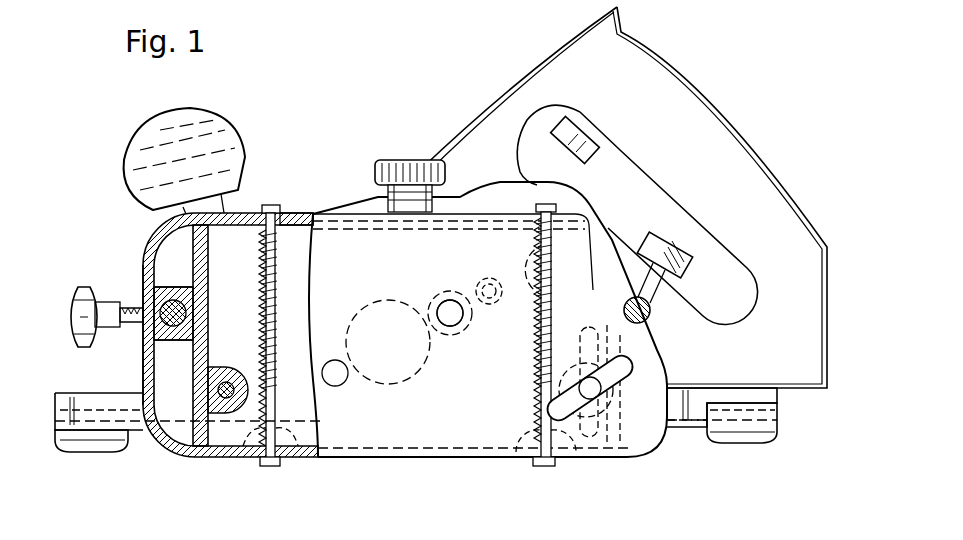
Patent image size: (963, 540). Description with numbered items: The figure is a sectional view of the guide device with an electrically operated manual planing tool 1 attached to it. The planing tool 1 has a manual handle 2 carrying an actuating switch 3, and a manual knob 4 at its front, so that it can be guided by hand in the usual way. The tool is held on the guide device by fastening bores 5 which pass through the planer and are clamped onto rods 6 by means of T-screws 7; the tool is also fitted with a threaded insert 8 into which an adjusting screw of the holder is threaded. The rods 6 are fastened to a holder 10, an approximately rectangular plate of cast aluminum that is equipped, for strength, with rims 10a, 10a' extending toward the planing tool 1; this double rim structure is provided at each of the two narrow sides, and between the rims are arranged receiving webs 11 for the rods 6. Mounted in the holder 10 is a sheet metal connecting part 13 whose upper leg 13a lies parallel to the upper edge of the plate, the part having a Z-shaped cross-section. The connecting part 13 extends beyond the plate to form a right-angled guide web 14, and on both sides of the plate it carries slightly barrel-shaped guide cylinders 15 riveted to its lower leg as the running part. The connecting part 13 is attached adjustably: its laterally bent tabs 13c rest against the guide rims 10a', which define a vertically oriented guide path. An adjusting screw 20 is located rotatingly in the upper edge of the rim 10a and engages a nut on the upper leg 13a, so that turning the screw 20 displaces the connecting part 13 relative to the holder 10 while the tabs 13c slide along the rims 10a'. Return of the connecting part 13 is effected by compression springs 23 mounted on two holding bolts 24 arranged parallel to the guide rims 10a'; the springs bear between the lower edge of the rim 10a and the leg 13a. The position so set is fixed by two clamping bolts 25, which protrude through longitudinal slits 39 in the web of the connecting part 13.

The manual planing tool 1 is at (342, 190).
The manual handle 2 is at (700, 127).
The actuating switch 3 is at (555, 120).
The manual knob 4 is at (213, 120).
The fastening bores 5 is at (648, 317).
The rods 6 is at (147, 362).
The T-screws 7 is at (82, 292).
The threaded insert 8 is at (470, 327).
The holder 10 is at (468, 243).
The rim 10a is at (230, 298).
The guide rim 10a' is at (385, 364).
The receiving webs 11 is at (142, 333).
The connecting part 13 is at (240, 240).
The upper leg 13a is at (310, 213).
The laterally bent tabs 13c is at (208, 348).
The guide web 14 is at (137, 413).
The guide cylinders 15 is at (97, 450).
The adjusting screw 20 is at (401, 165).
The compression springs 23 is at (261, 440).
The holding bolts 24 is at (283, 432).
The clamping bolts 25 is at (592, 398).
The longitudinal slits 39 is at (578, 352).